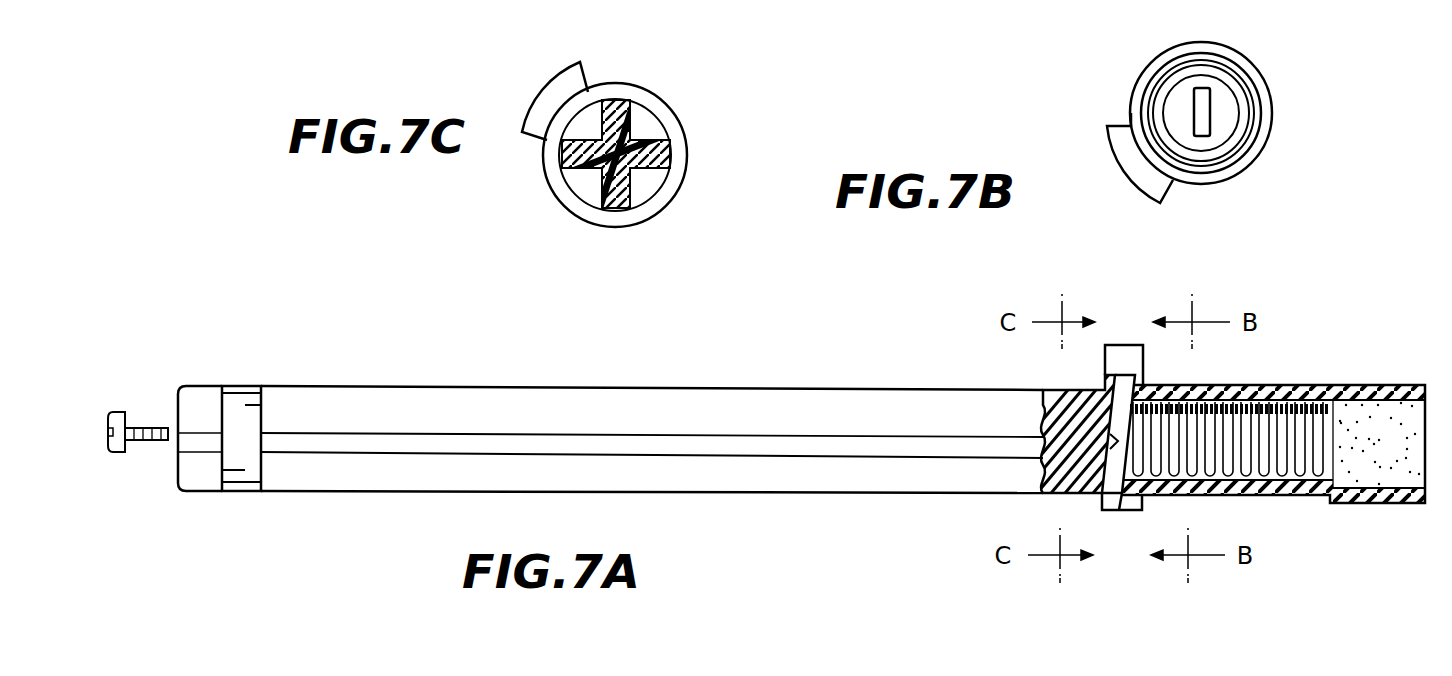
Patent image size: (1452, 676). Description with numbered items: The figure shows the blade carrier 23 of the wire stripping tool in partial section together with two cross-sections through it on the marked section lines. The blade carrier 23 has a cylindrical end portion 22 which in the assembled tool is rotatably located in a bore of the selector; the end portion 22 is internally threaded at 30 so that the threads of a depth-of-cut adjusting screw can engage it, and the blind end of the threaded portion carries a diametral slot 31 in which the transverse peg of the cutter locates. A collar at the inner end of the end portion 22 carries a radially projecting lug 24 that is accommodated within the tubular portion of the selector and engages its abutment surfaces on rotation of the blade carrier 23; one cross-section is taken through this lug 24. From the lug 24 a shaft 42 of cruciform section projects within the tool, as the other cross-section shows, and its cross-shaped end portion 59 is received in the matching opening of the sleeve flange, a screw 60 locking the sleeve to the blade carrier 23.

In FIG. 7A, the cylindrical end portion 22 is at (1323, 388).
In FIG. 7C, the blade carrier 23 is at (630, 240).
In FIG. 7B, the blade carrier 23 is at (1228, 196).
In FIG. 7A, the radially projecting lug 24 is at (1118, 360).
In FIG. 7C, the radially projecting lug 24 is at (532, 125).
In FIG. 7B, the radially projecting lug 24 is at (1120, 142).
In FIG. 7A, the internal threads 30 is at (1297, 392).
In FIG. 7A, the diametral slot 31 is at (1114, 446).
In FIG. 7B, the diametral slot 31 is at (1200, 115).
In FIG. 7A, the shaft 42 is at (760, 450).
In FIG. 7C, the shaft 42 is at (608, 180).
In FIG. 7A, the end portion of the blade carrier shaft 59 is at (200, 473).
In FIG. 7A, the screw 60 is at (118, 452).